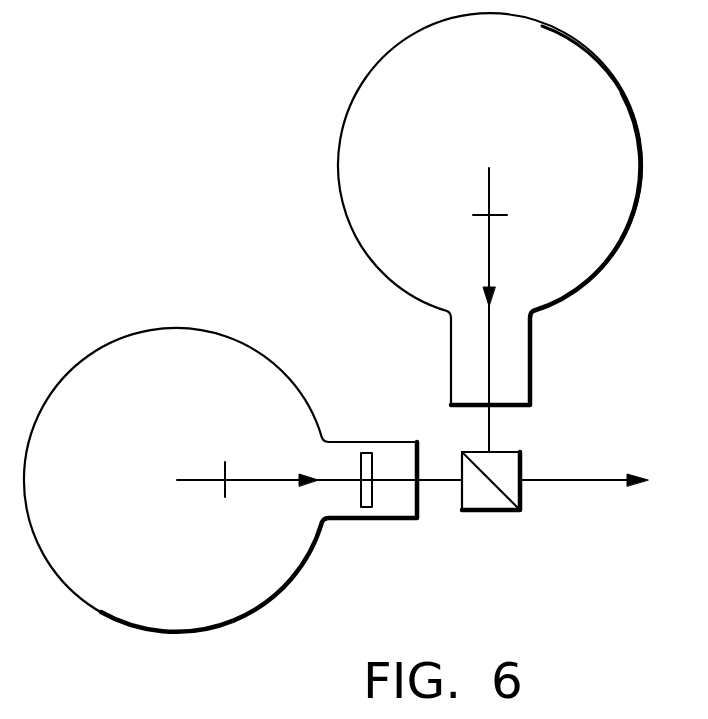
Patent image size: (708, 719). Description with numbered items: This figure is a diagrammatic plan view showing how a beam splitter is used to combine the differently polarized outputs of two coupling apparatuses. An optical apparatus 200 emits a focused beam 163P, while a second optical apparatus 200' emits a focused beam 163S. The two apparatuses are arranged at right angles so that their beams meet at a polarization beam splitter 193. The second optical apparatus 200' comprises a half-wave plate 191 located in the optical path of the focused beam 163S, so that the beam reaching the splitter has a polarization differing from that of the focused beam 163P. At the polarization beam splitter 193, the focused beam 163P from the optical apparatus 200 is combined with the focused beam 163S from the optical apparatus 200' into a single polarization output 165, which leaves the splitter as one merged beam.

The optical apparatus 200 is at (454, 209).
The optical apparatus 200' is at (220, 457).
The half-wave plate 191 is at (363, 506).
The focused beam 163S is at (440, 483).
The focused beam 163P is at (492, 430).
The polarization beam splitter 193 is at (521, 497).
The polarization output 165 is at (621, 478).